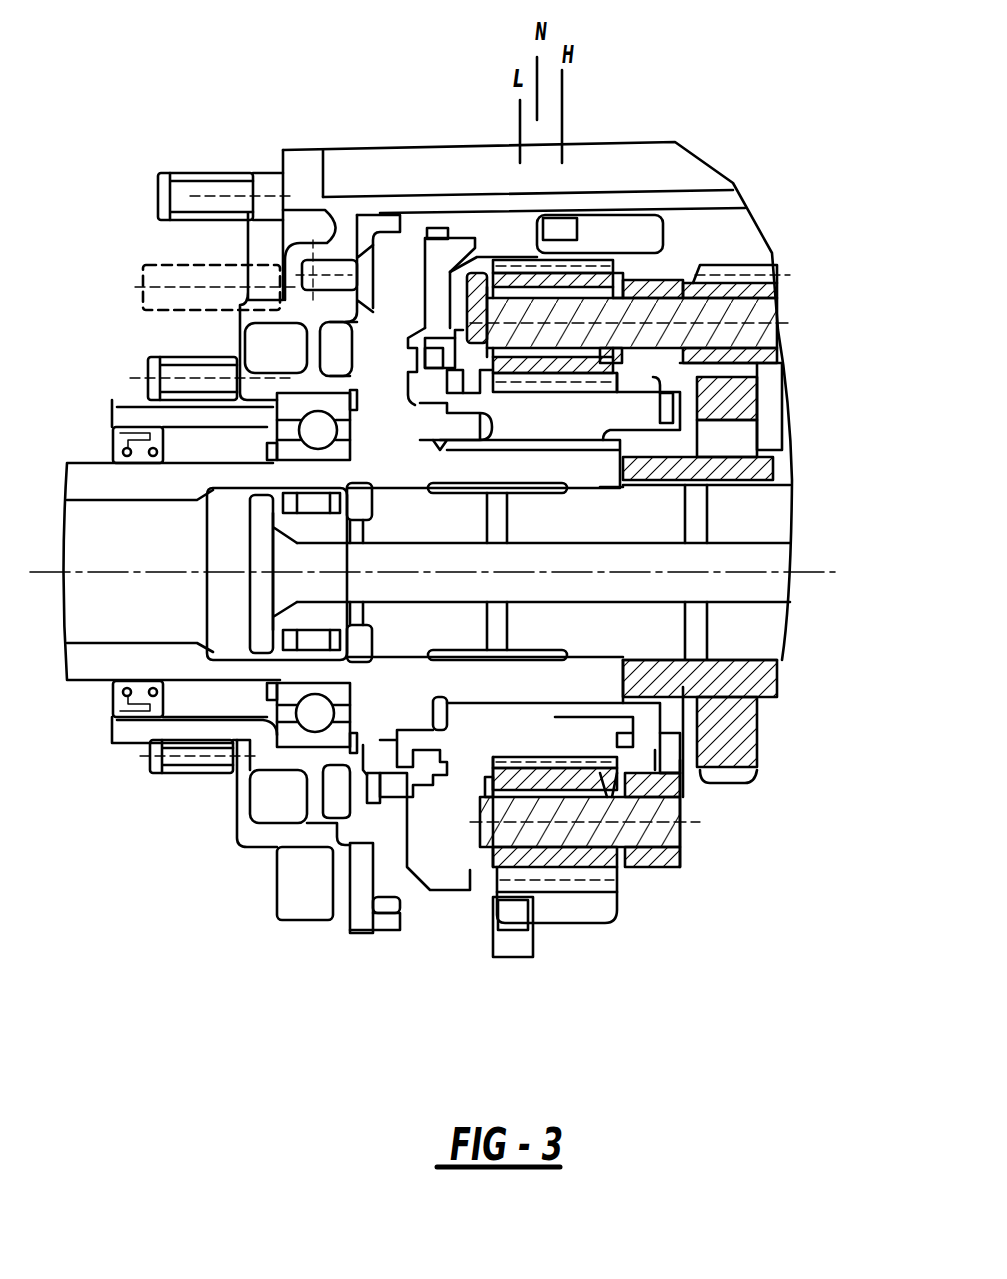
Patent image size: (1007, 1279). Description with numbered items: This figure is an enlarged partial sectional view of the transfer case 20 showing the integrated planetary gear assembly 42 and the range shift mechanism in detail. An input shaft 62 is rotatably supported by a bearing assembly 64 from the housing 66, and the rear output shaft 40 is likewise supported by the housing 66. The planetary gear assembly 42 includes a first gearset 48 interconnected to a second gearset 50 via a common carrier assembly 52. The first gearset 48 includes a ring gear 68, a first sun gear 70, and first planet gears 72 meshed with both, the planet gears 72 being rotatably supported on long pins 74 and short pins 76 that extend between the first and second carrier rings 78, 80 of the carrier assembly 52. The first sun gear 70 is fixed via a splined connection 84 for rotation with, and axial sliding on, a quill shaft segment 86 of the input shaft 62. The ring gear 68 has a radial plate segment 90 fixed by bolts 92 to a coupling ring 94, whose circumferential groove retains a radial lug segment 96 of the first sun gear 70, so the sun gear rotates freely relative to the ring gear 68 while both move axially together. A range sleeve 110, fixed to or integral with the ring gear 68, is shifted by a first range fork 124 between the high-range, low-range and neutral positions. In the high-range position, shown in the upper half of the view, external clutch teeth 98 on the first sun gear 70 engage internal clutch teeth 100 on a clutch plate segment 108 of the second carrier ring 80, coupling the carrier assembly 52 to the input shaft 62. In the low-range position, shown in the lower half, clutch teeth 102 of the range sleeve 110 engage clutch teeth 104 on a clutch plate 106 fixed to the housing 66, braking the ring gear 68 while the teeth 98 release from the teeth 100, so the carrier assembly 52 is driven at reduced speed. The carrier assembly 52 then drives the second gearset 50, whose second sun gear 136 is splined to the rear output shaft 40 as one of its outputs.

The transfer case 20 is at (752, 86).
The rear output shaft 40 is at (760, 512).
The planetary gear assembly 42 is at (745, 242).
The first gearset 48 is at (676, 252).
The second gearset 50 is at (777, 285).
The carrier assembly 52 is at (680, 866).
The input shaft 62 is at (85, 460).
The bearing assembly 64 is at (290, 405).
The housing 66 is at (300, 170).
The ring gear 68 is at (580, 905).
The first sun gear 70 is at (580, 430).
The first planet gears 72 is at (480, 853).
The long pins 74 is at (790, 337).
The short pins 76 is at (660, 828).
The first carrier ring 78 is at (397, 873).
The second carrier ring 80 is at (653, 865).
The splined connection 84 is at (570, 443).
The quill shaft segment 86 is at (410, 468).
The radial plate segment 90 is at (440, 285).
The bolts 92 is at (412, 362).
The coupling ring 94 is at (397, 805).
The radial lug segment 96 is at (457, 387).
The external clutch teeth 98 is at (612, 740).
The internal clutch teeth 100 is at (670, 740).
The clutch teeth 102 is at (447, 210).
The clutch teeth 104 is at (388, 200).
The clutch plate 106 is at (360, 930).
The clutch plate segment 108 is at (667, 773).
The range sleeve 110 is at (600, 238).
The first range fork 124 is at (510, 935).
The second sun gear 136 is at (720, 730).